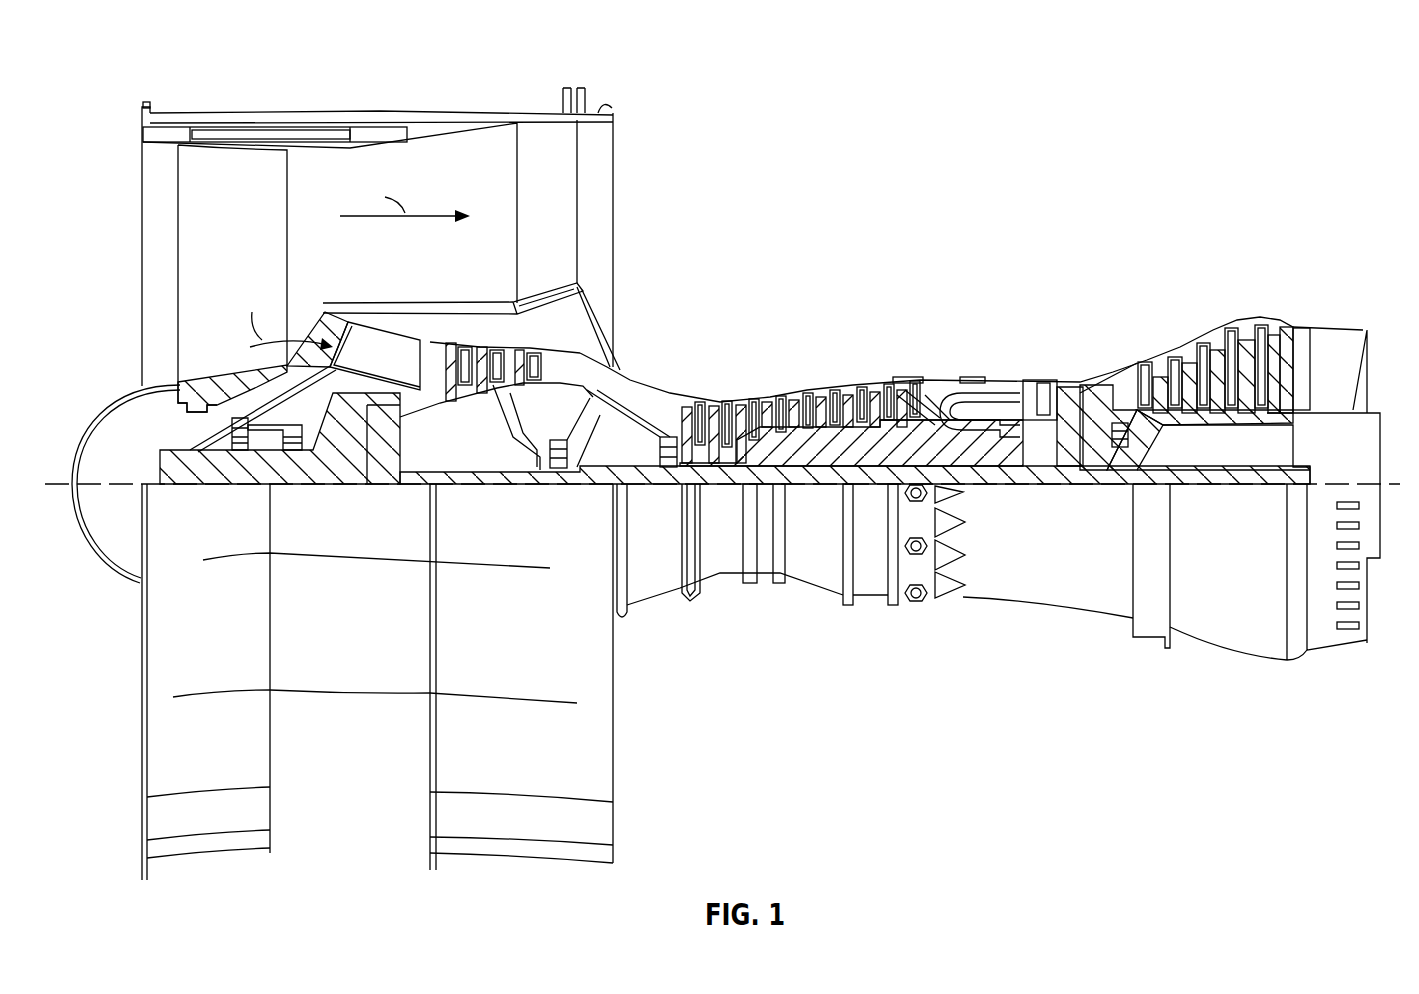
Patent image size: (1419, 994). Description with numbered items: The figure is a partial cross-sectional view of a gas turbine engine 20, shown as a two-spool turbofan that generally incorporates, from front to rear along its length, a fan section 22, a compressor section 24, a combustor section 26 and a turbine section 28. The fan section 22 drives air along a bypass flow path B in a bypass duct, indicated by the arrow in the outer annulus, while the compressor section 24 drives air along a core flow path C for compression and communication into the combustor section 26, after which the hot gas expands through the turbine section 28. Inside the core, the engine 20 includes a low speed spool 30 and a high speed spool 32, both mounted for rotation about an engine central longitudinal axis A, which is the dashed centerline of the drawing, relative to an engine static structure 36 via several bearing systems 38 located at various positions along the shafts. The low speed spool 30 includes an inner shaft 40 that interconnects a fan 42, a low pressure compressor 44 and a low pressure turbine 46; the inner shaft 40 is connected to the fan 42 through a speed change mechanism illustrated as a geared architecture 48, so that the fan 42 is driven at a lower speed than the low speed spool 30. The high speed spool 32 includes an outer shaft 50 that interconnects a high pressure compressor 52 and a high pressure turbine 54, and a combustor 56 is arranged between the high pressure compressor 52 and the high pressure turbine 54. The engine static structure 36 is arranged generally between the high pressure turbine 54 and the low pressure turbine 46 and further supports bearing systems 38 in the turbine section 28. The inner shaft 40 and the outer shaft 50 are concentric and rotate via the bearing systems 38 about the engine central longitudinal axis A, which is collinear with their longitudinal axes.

The gas turbine engine 20 is at (1194, 151).
The fan section 22 is at (237, 96).
The compressor section 24 is at (810, 335).
The combustor section 26 is at (956, 353).
The turbine section 28 is at (1230, 447).
The low speed spool 30 is at (830, 497).
The high speed spool 32 is at (895, 380).
The engine static structure 36 is at (870, 610).
The bearing systems 38 is at (243, 452).
The inner shaft 40 is at (627, 482).
The fan 42 is at (254, 242).
The low pressure compressor 44 is at (560, 345).
The low pressure turbine 46 is at (1218, 345).
The geared architecture 48 is at (380, 452).
The outer shaft 50 is at (1000, 462).
The high pressure compressor 52 is at (795, 455).
The high pressure turbine 54 is at (1055, 380).
The combustor 56 is at (977, 406).
The engine central longitudinal axis A is at (1390, 482).
The bypass flow path B is at (405, 202).
The core flow path C is at (288, 316).